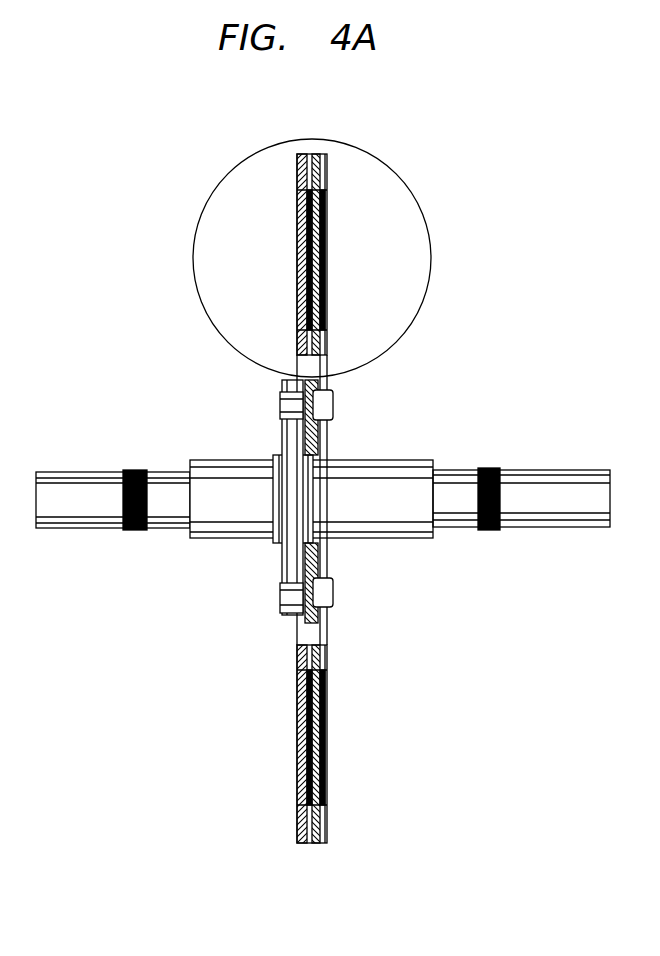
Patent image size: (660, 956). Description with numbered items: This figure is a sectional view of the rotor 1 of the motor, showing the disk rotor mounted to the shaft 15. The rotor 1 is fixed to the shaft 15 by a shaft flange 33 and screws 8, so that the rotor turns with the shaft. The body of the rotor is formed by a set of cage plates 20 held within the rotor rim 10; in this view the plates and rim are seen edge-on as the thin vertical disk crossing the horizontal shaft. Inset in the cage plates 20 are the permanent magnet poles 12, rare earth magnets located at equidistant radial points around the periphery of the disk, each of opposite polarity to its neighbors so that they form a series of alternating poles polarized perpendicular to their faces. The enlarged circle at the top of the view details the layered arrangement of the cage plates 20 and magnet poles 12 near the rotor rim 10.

The rotor 1 is at (468, 390).
The screws 8 is at (335, 590).
The rotor rim 10 is at (323, 153).
The permanent magnet poles 12 is at (328, 235).
The shaft 15 is at (552, 497).
The cage plates 20 is at (300, 812).
The shaft flange 33 is at (292, 558).